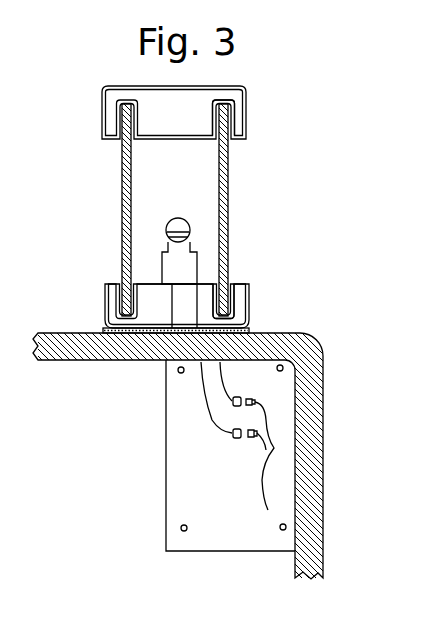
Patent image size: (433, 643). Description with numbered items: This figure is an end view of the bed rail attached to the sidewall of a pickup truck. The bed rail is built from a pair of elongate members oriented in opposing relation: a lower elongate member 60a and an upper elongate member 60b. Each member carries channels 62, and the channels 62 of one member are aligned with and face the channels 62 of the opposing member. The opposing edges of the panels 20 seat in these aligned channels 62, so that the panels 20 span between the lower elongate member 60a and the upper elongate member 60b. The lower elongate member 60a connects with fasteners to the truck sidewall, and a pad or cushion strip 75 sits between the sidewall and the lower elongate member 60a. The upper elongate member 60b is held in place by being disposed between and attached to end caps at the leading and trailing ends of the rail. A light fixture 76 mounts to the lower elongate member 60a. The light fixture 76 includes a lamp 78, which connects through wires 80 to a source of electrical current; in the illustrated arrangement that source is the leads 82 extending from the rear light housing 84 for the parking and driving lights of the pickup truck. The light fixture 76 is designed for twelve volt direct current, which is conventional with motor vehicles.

The panel 20 is at (122, 213).
The lower elongate member 60a is at (250, 312).
The upper elongate member 60b is at (243, 90).
The channel 62 is at (233, 139).
The pad or cushion strip 75 is at (103, 333).
The light fixture 76 is at (161, 259).
The lamp 78 is at (178, 218).
The wires 80 is at (172, 308).
The leads 82 is at (273, 461).
The rear light housing 84 is at (268, 490).